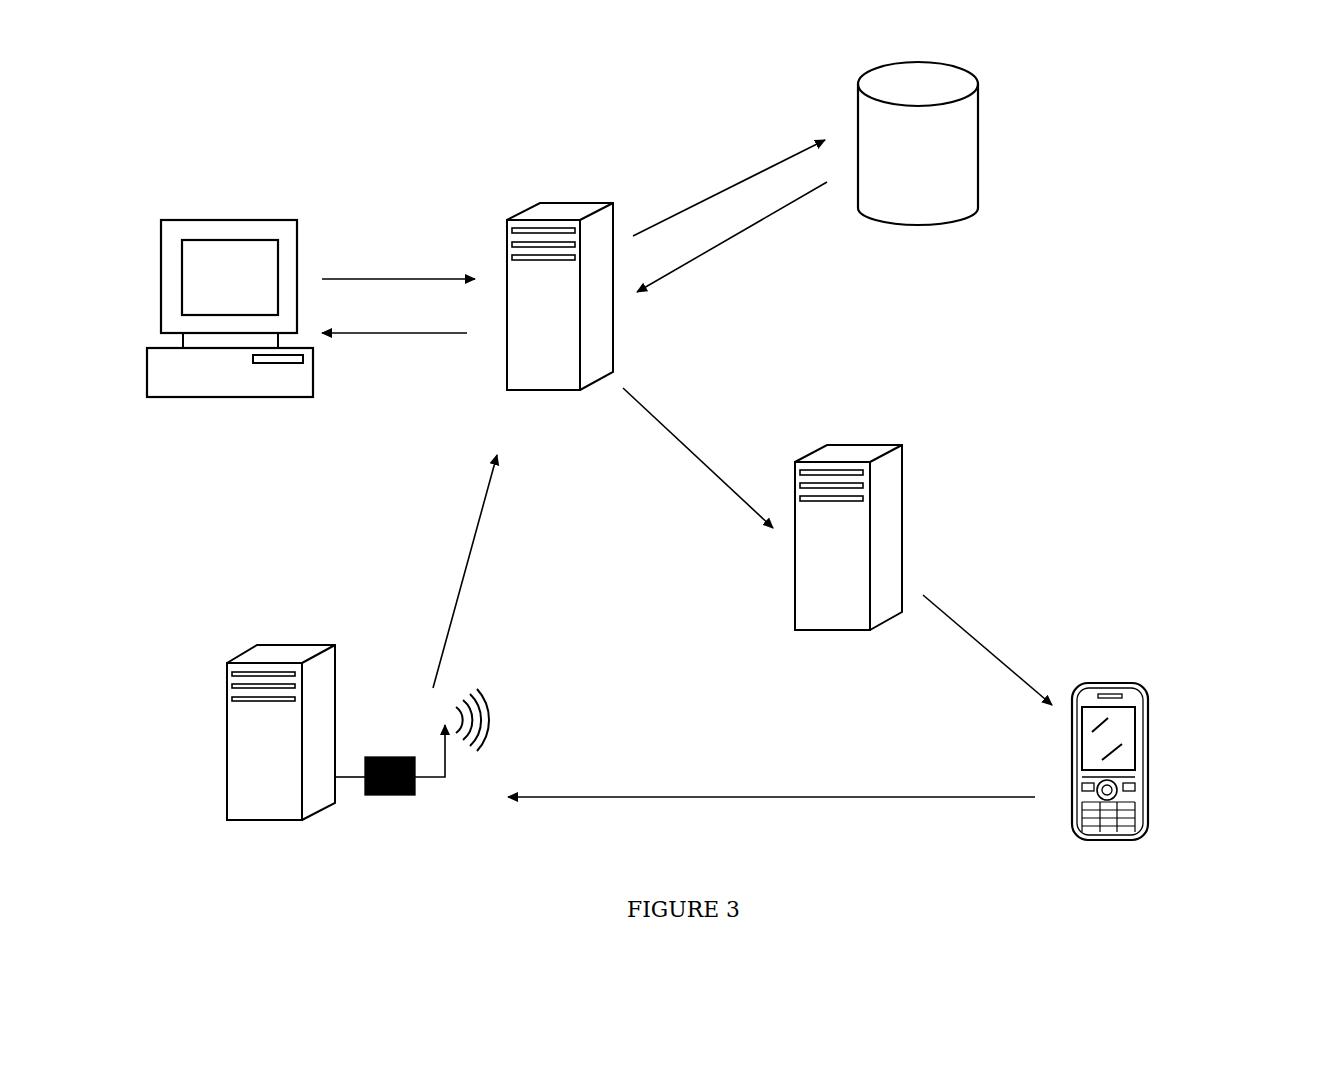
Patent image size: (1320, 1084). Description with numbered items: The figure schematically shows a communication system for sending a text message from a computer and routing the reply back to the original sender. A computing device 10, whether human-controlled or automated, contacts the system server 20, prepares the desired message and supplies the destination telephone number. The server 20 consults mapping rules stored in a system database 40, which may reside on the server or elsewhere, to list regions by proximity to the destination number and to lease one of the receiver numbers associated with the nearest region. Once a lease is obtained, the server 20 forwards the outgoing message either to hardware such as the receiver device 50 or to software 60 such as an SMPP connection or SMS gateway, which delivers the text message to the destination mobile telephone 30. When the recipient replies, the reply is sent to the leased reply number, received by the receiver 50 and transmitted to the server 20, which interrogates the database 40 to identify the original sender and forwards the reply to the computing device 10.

The computing device 10 is at (215, 205).
The system server 20 is at (555, 350).
The destination mobile telephone 30 is at (1155, 757).
The system database 40 is at (938, 160).
The receiver device 50 is at (240, 763).
The software for sending text messages 60 is at (855, 565).